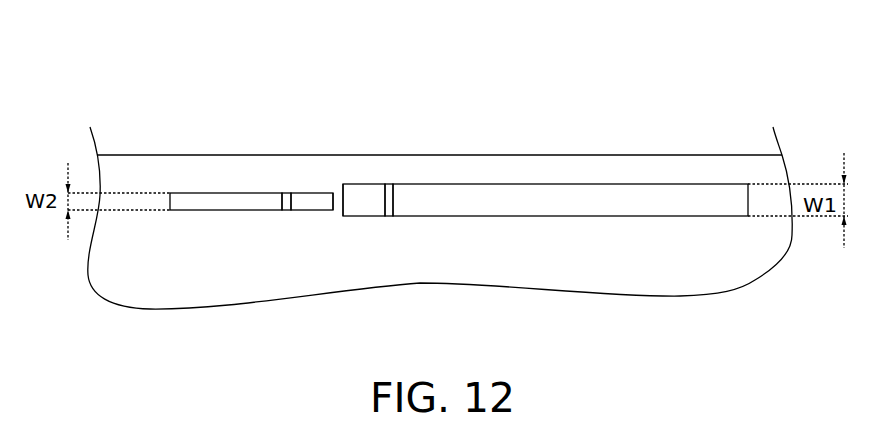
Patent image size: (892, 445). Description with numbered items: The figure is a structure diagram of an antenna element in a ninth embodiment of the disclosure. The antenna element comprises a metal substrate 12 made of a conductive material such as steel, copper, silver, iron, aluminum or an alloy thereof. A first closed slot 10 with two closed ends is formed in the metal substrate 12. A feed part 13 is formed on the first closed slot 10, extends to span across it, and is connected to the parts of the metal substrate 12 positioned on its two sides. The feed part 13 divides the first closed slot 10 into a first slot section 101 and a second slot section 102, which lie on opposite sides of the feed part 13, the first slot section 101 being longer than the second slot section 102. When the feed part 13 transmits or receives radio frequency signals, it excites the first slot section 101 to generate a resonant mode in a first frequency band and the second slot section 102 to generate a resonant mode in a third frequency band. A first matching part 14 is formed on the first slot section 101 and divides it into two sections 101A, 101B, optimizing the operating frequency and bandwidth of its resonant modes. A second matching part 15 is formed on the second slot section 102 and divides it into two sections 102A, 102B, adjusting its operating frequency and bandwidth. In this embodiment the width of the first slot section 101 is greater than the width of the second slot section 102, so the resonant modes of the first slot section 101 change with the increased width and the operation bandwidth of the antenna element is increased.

The first closed slot 10 is at (437, 68).
The first slot section 101 is at (477, 104).
The section of the first slot section 101A is at (368, 200).
The section of the first slot section 101B is at (446, 200).
The second slot section 102 is at (332, 104).
The section of the second slot section 102A is at (222, 200).
The section of the second slot section 102B is at (302, 200).
The metal substrate 12 is at (596, 170).
The feed part 13 is at (337, 218).
The first matching part 14 is at (389, 218).
The second matching part 15 is at (286, 211).